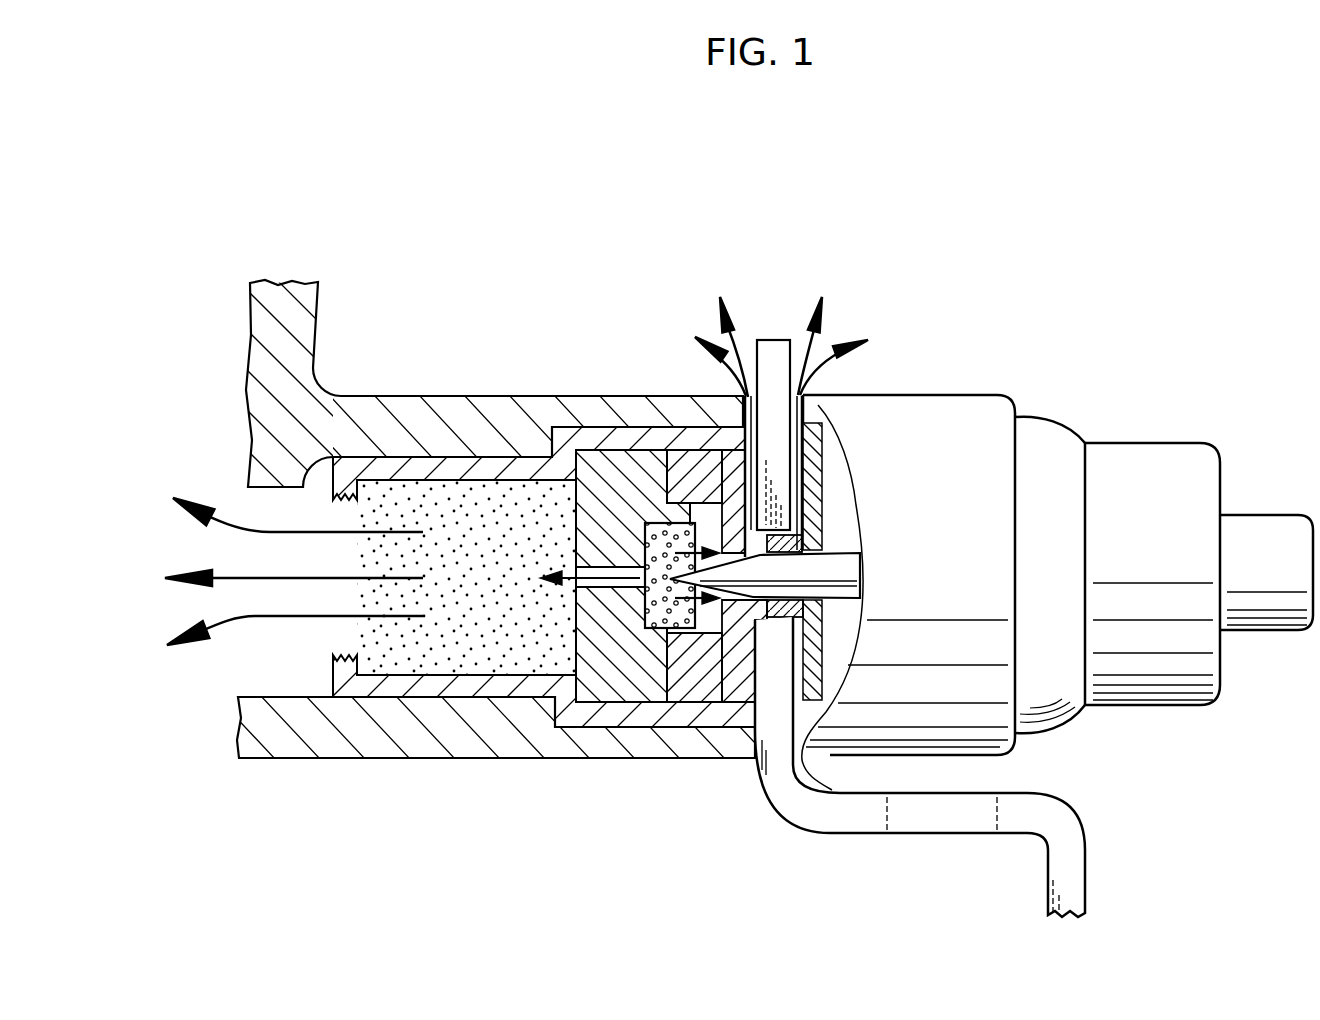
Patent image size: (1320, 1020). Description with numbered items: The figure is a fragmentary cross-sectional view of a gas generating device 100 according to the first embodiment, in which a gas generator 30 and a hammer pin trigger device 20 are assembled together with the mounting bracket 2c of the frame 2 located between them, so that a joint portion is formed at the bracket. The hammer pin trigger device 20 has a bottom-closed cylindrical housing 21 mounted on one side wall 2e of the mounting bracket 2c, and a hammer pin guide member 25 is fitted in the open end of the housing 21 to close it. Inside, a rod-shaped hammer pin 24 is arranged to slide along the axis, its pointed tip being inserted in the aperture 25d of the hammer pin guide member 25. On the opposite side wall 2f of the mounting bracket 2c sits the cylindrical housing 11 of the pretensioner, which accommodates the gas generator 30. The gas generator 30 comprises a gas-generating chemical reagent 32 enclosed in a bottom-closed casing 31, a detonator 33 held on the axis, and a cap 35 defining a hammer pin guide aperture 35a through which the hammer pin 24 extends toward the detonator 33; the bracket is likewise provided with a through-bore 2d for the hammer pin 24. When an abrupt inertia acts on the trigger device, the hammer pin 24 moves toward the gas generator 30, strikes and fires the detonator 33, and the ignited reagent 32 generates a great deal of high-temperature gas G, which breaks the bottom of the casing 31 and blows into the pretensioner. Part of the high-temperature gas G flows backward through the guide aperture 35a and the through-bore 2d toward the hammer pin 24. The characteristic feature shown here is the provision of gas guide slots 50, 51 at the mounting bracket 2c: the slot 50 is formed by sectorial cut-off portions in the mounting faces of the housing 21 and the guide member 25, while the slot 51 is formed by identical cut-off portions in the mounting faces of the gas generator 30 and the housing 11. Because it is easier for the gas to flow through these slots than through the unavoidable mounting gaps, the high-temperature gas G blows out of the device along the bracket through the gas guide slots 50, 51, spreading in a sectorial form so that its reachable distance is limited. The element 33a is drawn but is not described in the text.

The gas generating device 100 is at (852, 175).
The gas generator 30 is at (453, 440).
The hammer pin trigger device 20 is at (1027, 385).
The frame 2 is at (1077, 868).
The mounting bracket 2c is at (770, 352).
The through-bore 2d is at (752, 745).
The side wall of the mounting bracket 2e is at (795, 770).
The opposite side wall of the mounting bracket 2f is at (745, 665).
The housing 11 is at (375, 420).
The housing 21 is at (1207, 478).
The hammer pin 24 is at (835, 563).
The hammer pin guide member 25 is at (793, 717).
The aperture 25d is at (850, 585).
The casing 31 is at (463, 688).
The gas-generating chemical reagent 32 is at (481, 593).
The detonator 33 is at (658, 625).
The passage 33a is at (615, 592).
The cap 35 is at (697, 695).
The hammer pin guide aperture 35a is at (727, 545).
The gas guide slot 50 is at (797, 490).
The gas guide slot 51 is at (745, 478).
The high-temperature gas G is at (505, 456).